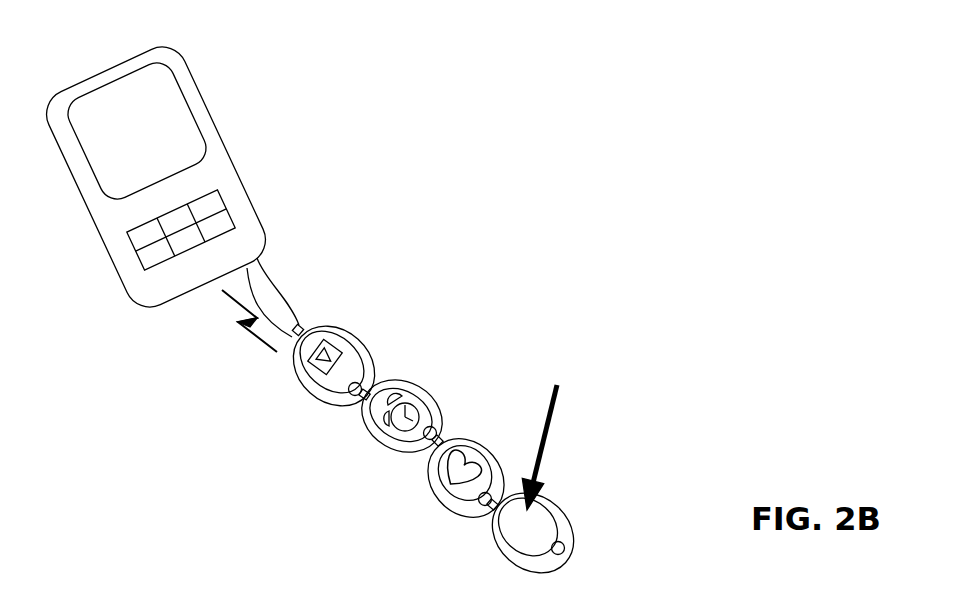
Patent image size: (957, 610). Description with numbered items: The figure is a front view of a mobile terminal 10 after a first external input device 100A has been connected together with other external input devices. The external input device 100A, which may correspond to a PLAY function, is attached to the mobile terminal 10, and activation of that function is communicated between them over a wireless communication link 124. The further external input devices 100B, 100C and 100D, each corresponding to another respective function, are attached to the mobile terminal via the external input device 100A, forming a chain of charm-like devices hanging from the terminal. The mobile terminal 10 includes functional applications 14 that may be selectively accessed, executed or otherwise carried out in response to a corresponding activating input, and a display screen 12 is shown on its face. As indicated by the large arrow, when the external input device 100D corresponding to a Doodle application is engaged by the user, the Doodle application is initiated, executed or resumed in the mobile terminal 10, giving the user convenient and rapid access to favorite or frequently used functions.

The mobile terminal 10 is at (183, 70).
The display screen 12 is at (195, 127).
The functional applications 14 is at (217, 193).
The wireless communication link 124 is at (259, 337).
The external input device 100A is at (328, 327).
The external input device 100B is at (390, 378).
The external input device 100C is at (446, 510).
The external input device 100D is at (552, 502).